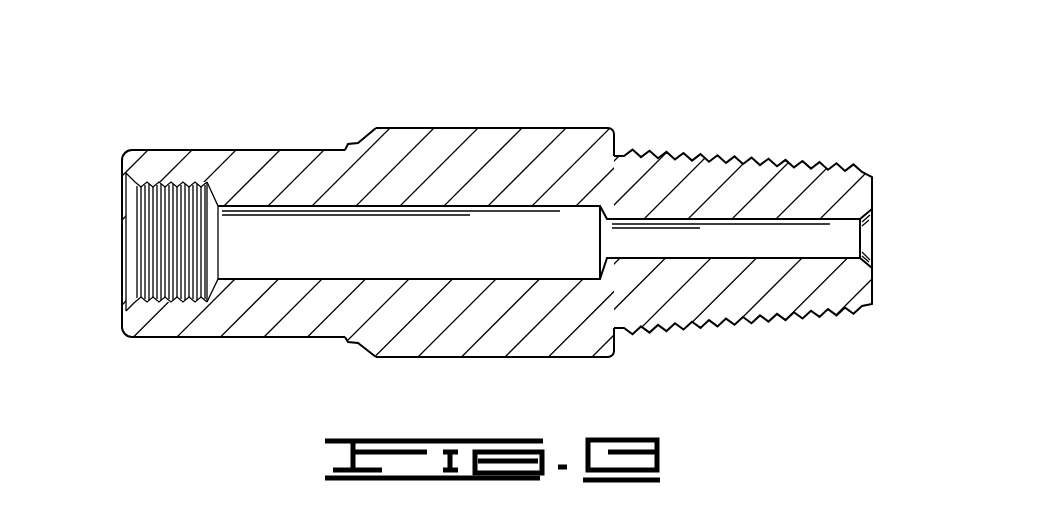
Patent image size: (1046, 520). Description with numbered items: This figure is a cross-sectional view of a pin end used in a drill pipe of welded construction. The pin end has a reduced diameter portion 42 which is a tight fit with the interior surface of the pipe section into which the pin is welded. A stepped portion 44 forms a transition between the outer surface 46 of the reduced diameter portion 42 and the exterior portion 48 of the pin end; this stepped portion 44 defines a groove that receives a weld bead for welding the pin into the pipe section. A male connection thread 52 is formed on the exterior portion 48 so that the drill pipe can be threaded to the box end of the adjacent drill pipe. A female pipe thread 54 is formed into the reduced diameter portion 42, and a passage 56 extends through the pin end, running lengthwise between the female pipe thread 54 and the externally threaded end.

The reduced diameter portion 42 is at (287, 155).
The stepped portion 44 is at (353, 118).
The outer surface 46 is at (160, 150).
The exterior portion 48 is at (553, 108).
The male connection thread 52 is at (840, 312).
The female pipe thread 54 is at (168, 292).
The passage 56 is at (340, 276).